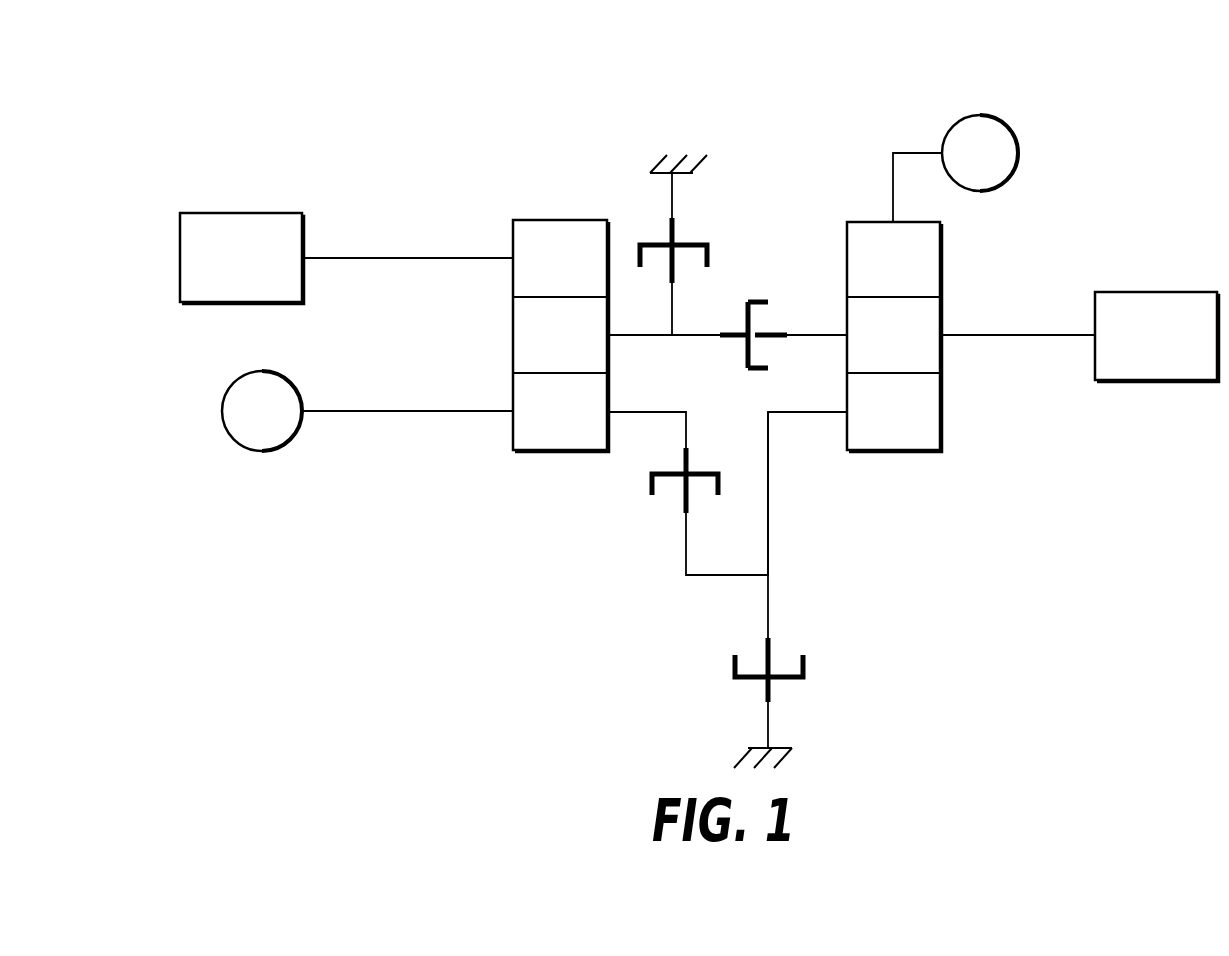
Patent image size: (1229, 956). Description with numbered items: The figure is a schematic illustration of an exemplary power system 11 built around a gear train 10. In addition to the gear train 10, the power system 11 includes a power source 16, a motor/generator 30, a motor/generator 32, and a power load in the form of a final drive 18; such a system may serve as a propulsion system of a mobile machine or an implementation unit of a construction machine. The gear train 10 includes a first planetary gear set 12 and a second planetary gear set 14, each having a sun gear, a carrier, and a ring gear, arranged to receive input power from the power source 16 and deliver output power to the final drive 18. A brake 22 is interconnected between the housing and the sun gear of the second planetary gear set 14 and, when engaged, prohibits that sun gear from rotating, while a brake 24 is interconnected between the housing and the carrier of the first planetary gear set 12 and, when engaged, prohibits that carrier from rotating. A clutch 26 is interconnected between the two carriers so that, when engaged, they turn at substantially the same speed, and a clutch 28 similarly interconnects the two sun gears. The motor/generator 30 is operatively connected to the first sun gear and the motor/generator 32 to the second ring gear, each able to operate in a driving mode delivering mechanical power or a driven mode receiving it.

The gear train 10 is at (1142, 148).
The power system 11 is at (394, 154).
The planetary gear set 12 is at (507, 203).
The planetary gear set 14 is at (855, 188).
The power source 16 is at (302, 293).
The final drive 18 is at (1145, 382).
The brake 22 is at (708, 674).
The brake 24 is at (724, 224).
The clutch 26 is at (786, 280).
The clutch 28 is at (656, 520).
The motor/generator 30 is at (256, 451).
The motor/generator 32 is at (978, 191).